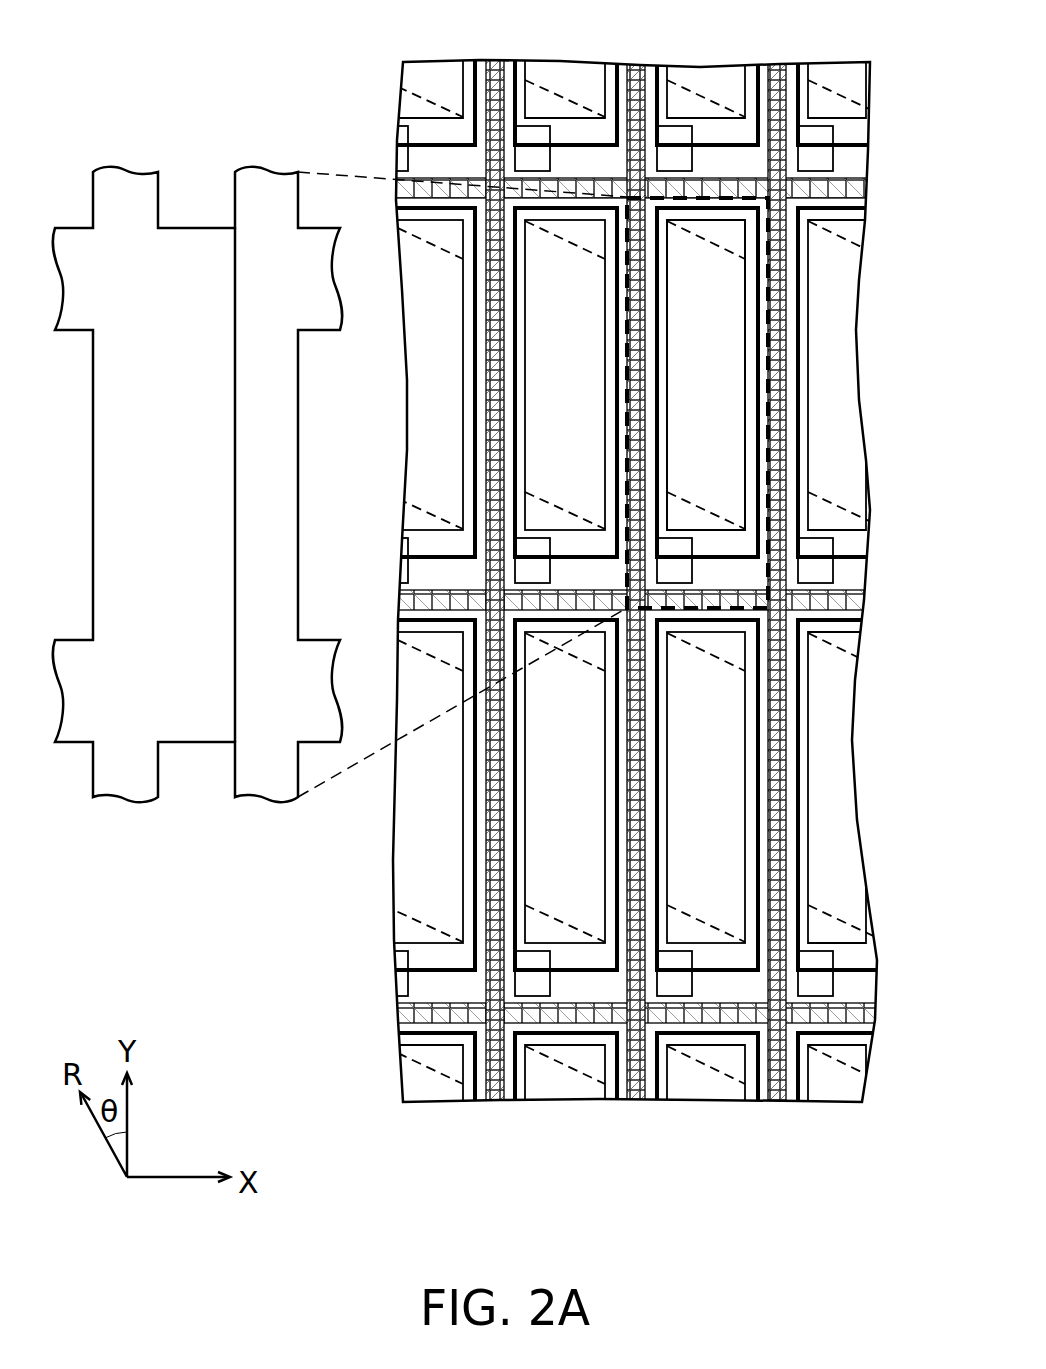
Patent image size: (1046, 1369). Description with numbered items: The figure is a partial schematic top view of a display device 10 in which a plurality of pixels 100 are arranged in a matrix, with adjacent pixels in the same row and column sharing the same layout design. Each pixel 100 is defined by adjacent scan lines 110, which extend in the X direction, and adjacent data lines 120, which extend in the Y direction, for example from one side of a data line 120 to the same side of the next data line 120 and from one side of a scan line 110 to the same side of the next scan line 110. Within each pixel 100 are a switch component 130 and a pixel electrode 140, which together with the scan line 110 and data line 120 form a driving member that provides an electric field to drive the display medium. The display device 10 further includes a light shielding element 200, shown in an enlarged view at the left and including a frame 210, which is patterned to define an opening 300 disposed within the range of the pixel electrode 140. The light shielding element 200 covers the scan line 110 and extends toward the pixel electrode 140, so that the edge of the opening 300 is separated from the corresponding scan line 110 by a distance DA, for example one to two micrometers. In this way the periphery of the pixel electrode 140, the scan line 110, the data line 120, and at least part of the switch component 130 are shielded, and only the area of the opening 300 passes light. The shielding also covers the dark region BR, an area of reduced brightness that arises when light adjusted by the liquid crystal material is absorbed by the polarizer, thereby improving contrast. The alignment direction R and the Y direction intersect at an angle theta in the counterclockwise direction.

The display device 10 is at (658, 600).
The pixel 100 is at (770, 318).
The scan line 110 is at (848, 604).
The data line 120 is at (779, 95).
The switch component 130 is at (670, 586).
The pixel electrode 140 is at (733, 552).
The light shielding element 200 is at (209, 522).
The frame 210 is at (290, 438).
The opening 300 is at (240, 529).
The dark region BR is at (728, 234).
The distance DA is at (715, 531).